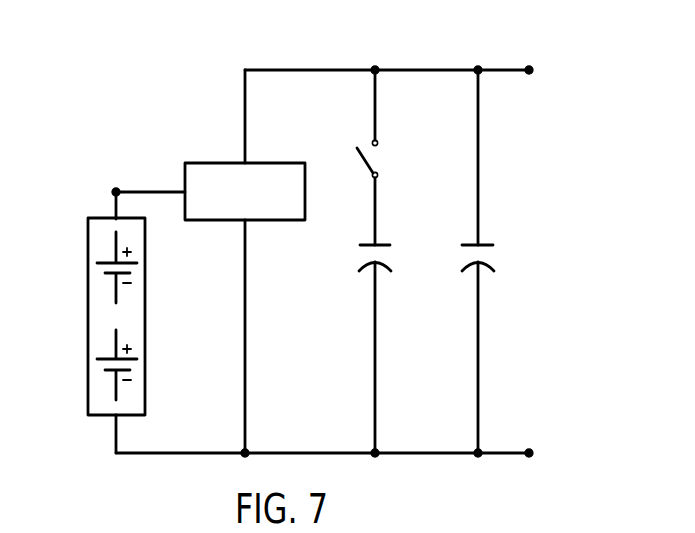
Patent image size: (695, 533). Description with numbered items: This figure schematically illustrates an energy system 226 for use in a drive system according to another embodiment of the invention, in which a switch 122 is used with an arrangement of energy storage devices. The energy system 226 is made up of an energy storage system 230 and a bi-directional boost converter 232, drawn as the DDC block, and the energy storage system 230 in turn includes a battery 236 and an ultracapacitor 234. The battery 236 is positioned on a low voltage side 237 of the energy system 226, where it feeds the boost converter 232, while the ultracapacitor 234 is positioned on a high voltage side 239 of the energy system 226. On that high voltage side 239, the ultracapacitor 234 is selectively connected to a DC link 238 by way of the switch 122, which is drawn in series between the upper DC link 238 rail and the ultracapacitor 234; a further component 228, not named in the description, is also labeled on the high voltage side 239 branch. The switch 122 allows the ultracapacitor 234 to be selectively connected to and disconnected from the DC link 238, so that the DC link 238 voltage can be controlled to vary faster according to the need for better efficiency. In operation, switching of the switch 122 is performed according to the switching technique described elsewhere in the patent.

The energy system 226 is at (156, 91).
The bi-directional boost converter 232 is at (217, 162).
The switch 122 is at (356, 132).
The DC link 238 is at (285, 70).
The high voltage side 239 is at (432, 44).
The ultra capacitor 228 is at (488, 239).
The ultracapacitor 234 is at (381, 274).
The battery 236 is at (145, 318).
The energy storage system 230 is at (360, 288).
The low voltage side 237 is at (118, 470).